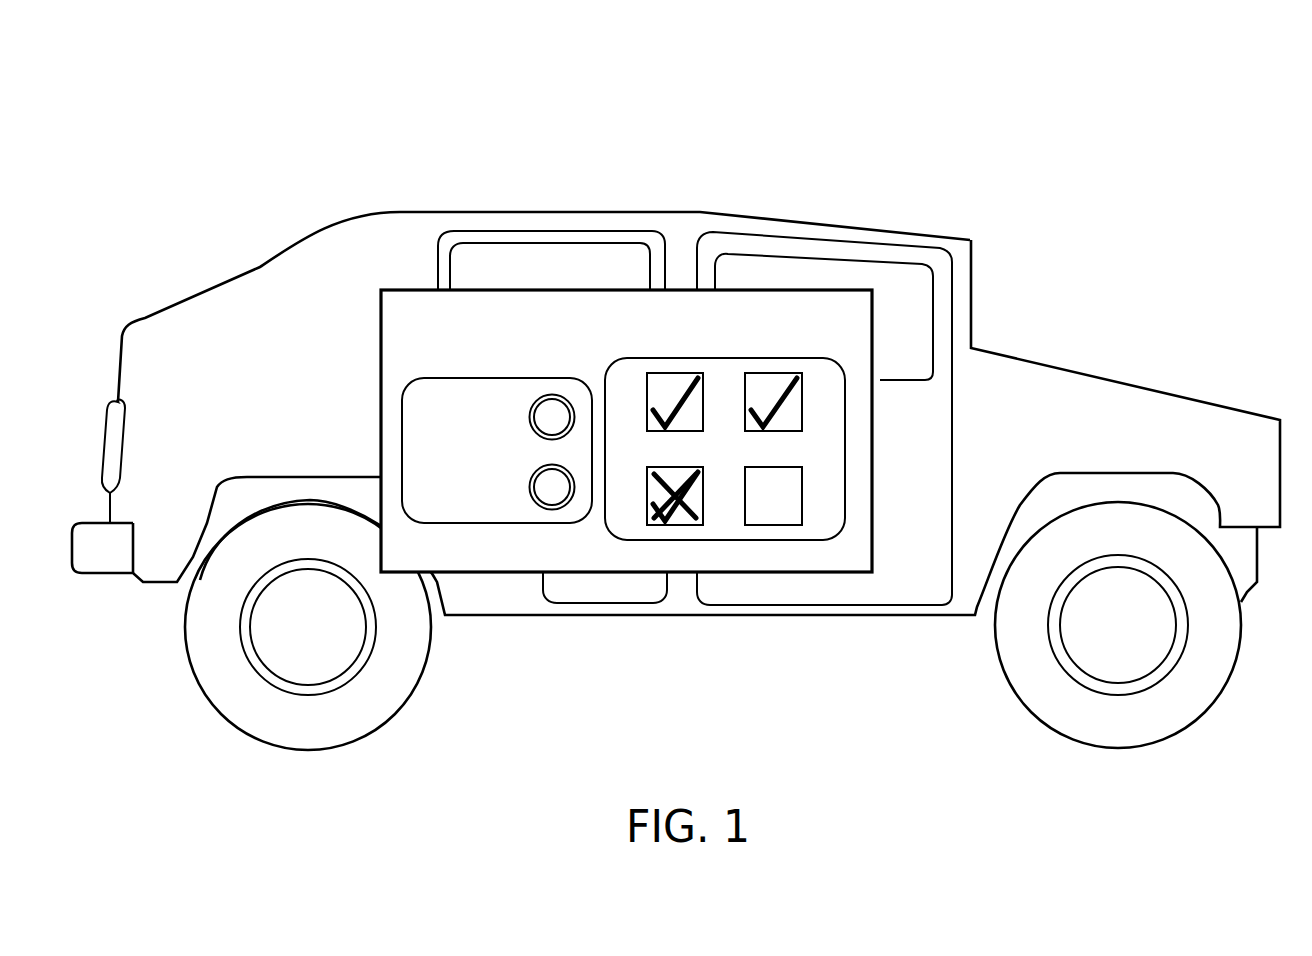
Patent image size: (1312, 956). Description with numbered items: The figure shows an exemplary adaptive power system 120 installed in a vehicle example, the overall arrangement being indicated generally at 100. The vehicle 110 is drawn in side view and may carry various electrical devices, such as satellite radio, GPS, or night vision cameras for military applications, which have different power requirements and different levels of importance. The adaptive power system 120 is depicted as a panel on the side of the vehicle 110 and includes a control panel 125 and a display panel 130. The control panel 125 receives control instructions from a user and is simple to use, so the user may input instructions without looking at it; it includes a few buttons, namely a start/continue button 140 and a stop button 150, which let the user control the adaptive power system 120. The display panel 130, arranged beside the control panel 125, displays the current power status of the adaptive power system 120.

The adaptive power system environment 100 is at (1128, 113).
The vehicle 110 is at (972, 298).
The adaptive power system 120 is at (381, 351).
The control panel 125 is at (402, 428).
The display panel 130 is at (845, 442).
The start/continue button 140 is at (543, 403).
The stop button 150 is at (543, 497).